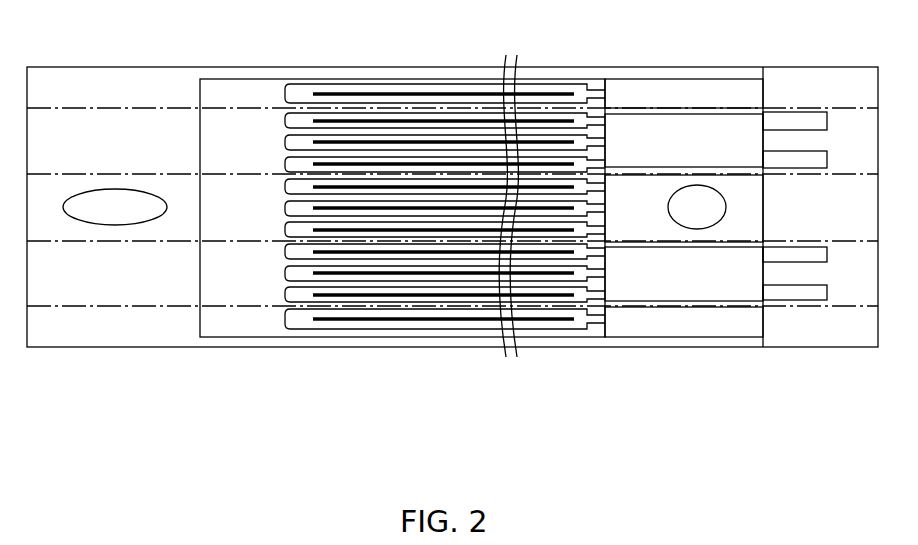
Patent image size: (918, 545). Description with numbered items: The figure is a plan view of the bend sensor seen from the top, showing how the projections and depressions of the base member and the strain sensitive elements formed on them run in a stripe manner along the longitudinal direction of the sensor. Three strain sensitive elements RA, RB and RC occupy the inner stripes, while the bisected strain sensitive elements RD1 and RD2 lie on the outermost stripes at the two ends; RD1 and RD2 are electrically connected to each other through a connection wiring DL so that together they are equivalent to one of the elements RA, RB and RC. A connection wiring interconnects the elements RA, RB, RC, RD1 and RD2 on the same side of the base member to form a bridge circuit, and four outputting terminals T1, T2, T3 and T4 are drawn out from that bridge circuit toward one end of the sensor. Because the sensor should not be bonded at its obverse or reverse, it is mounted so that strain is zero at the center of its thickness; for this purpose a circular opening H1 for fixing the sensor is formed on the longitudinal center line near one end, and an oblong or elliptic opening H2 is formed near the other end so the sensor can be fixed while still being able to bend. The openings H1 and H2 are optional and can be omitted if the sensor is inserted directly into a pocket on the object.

The connection wiring DL is at (200, 143).
The oblong or elliptic opening H2 is at (118, 189).
The circular opening H1 is at (697, 185).
The bisected strain sensitive element RD1 is at (281, 84).
The strain sensitive element RA is at (281, 113).
The strain sensitive element RB is at (281, 179).
The strain sensitive element RC is at (281, 244).
The bisected strain sensitive element RD2 is at (281, 309).
The outputting terminal T1 is at (787, 118).
The outputting terminal T2 is at (805, 158).
The outputting terminal T3 is at (778, 252).
The outputting terminal T4 is at (812, 290).